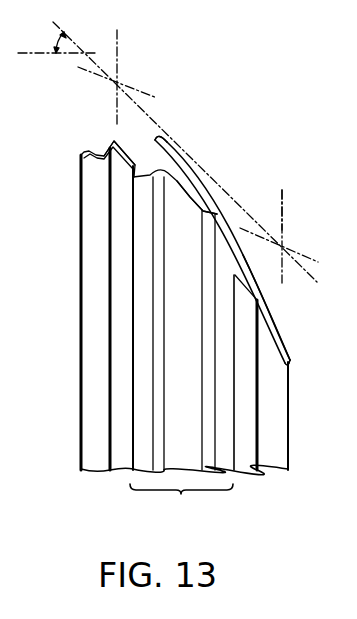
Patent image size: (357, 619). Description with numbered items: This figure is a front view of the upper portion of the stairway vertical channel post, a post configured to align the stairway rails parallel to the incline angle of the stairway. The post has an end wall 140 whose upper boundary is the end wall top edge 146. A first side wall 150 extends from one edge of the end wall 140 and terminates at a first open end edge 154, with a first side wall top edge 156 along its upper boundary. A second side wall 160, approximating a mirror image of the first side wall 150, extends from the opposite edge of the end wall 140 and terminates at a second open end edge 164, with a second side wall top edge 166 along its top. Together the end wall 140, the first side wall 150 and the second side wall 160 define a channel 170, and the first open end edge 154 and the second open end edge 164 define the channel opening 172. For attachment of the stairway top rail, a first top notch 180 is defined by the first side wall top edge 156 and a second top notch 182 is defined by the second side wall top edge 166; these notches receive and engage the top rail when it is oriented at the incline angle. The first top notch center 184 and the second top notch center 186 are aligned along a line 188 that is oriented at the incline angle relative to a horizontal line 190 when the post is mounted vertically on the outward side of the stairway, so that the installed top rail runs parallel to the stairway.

The end wall 140 is at (180, 223).
The end wall top edge 146 is at (197, 163).
The first side wall 150 is at (90, 422).
The first open end edge 154 is at (122, 344).
The first side wall top edge 156 is at (152, 134).
The second side wall 160 is at (270, 445).
The second open end edge 164 is at (247, 389).
The second side wall top edge 166 is at (257, 281).
The channel 170 is at (198, 392).
The channel opening 172 is at (181, 502).
The first top notch 180 is at (141, 152).
The second top notch 182 is at (282, 348).
The first top notch center 184 is at (118, 82).
The second top notch center 186 is at (290, 243).
The line 188 is at (250, 217).
The horizontal line 190 is at (43, 57).